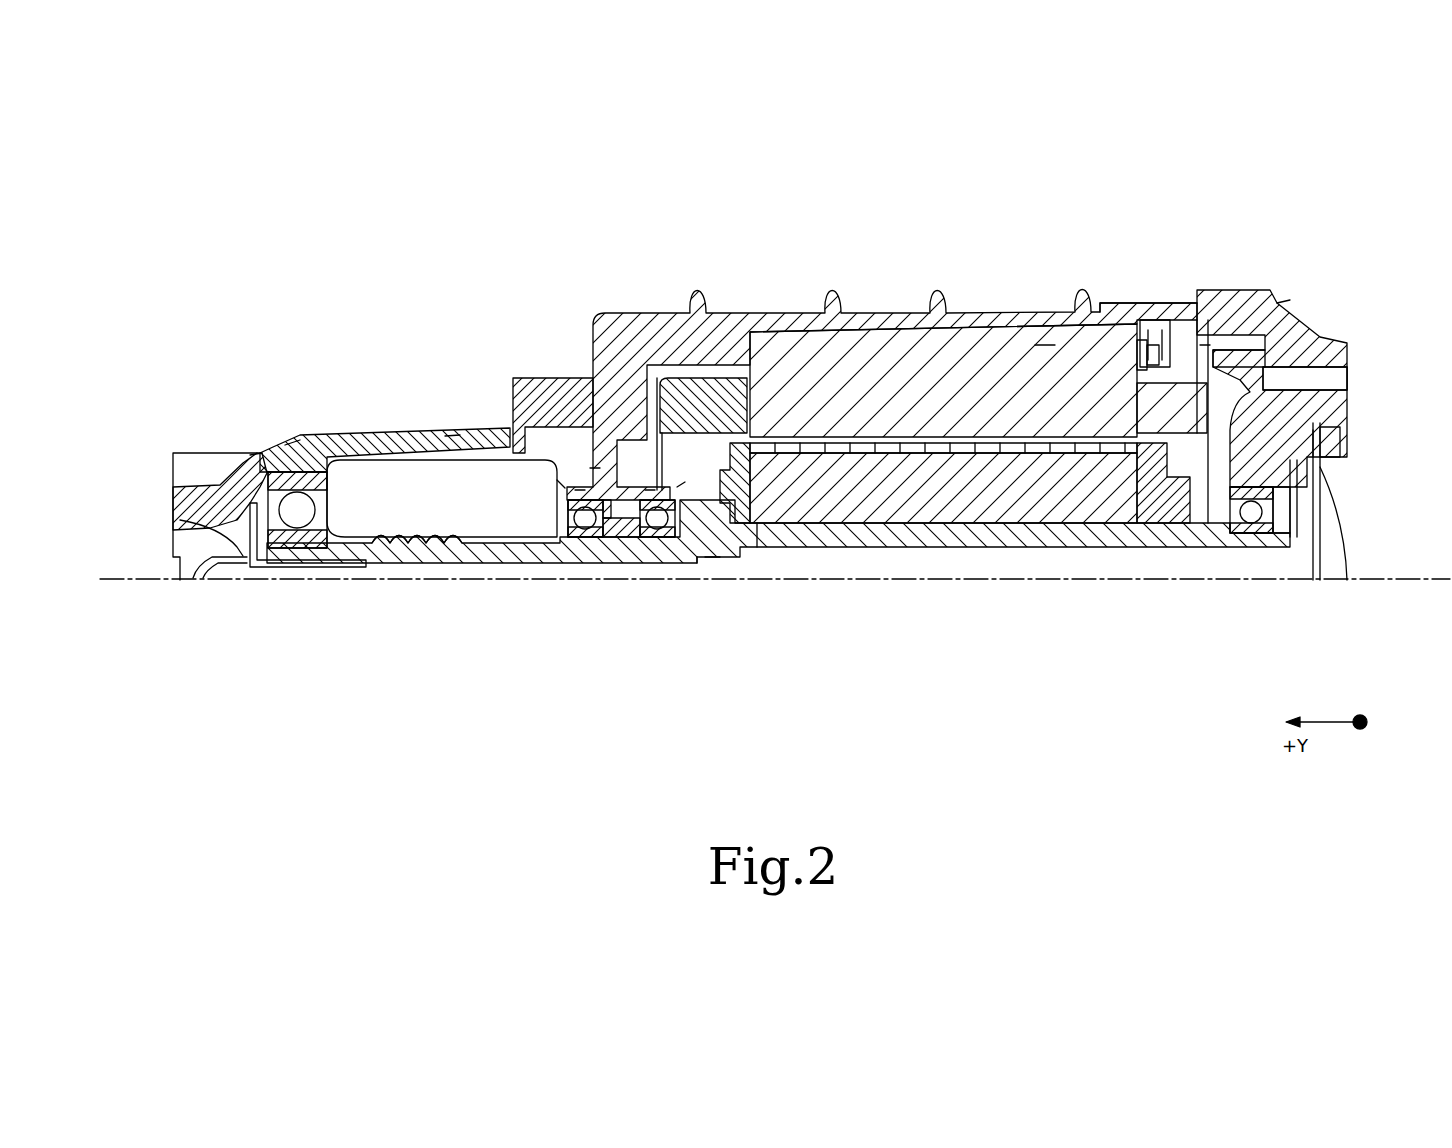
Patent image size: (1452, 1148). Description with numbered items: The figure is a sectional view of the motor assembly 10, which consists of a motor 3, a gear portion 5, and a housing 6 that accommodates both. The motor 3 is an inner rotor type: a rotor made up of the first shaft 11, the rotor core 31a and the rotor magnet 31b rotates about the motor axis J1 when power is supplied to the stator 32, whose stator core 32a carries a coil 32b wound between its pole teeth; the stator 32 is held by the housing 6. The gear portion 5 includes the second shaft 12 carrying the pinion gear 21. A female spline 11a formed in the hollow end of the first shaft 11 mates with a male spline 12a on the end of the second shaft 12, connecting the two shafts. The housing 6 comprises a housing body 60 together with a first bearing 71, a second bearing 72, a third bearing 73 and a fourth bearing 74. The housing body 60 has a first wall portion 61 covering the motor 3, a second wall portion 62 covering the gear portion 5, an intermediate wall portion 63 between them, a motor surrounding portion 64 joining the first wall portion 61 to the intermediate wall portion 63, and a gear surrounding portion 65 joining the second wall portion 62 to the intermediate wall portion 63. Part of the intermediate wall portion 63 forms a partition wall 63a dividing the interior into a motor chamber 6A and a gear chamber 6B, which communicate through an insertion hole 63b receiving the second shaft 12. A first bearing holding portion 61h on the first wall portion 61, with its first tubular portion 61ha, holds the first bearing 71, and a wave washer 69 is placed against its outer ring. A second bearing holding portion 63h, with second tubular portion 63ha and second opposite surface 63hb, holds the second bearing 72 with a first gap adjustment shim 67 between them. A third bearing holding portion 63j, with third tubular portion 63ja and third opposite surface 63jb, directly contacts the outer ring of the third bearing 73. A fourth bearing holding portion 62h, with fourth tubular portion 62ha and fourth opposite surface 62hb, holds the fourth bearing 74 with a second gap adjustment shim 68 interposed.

The motor assembly 10 is at (1337, 198).
The motor 3 is at (1210, 338).
The gear portion 5 is at (373, 476).
The housing 6 is at (1268, 285).
The motor chamber 6A is at (1205, 345).
The gear chamber 6B is at (408, 484).
The first shaft 11 is at (905, 542).
The female spline 11a is at (708, 552).
The second shaft 12 is at (465, 562).
The male spline 12a is at (692, 558).
The pinion gear 21 is at (412, 545).
The rotor core 31a is at (968, 495).
The rotor magnet 31b is at (1020, 452).
The stator 32 is at (1103, 316).
The stator core 32a is at (1045, 345).
The coil 32b is at (1180, 408).
The housing body 60 is at (1283, 293).
The first wall portion 61 is at (1340, 440).
The first bearing holding portion 61h is at (1268, 378).
The first tubular portion 61ha is at (1233, 485).
The second wall portion 62 is at (250, 522).
The fourth bearing holding portion 62h is at (321, 438).
The fourth tubular portion 62ha is at (292, 458).
The fourth opposite surface 62hb is at (253, 457).
The intermediate wall portion 63 is at (605, 468).
The partition wall 63a is at (592, 466).
The insertion hole 63b is at (592, 534).
The second bearing holding portion 63h is at (664, 485).
The second tubular portion 63ha is at (679, 486).
The second opposite surface 63hb is at (650, 488).
The third bearing holding portion 63j is at (527, 440).
The third tubular portion 63ja is at (578, 488).
The third opposite surface 63jb is at (553, 489).
The motor surrounding portion 64 is at (905, 314).
The gear surrounding portion 65 is at (452, 438).
The first gap adjustment shim 67 is at (620, 536).
The second gap adjustment shim 68 is at (258, 568).
The wave washer 69 is at (1281, 527).
The first bearing 71 is at (1248, 522).
The second bearing 72 is at (653, 527).
The third bearing 73 is at (585, 522).
The fourth bearing 74 is at (297, 514).
The motor axis J1 is at (1396, 579).